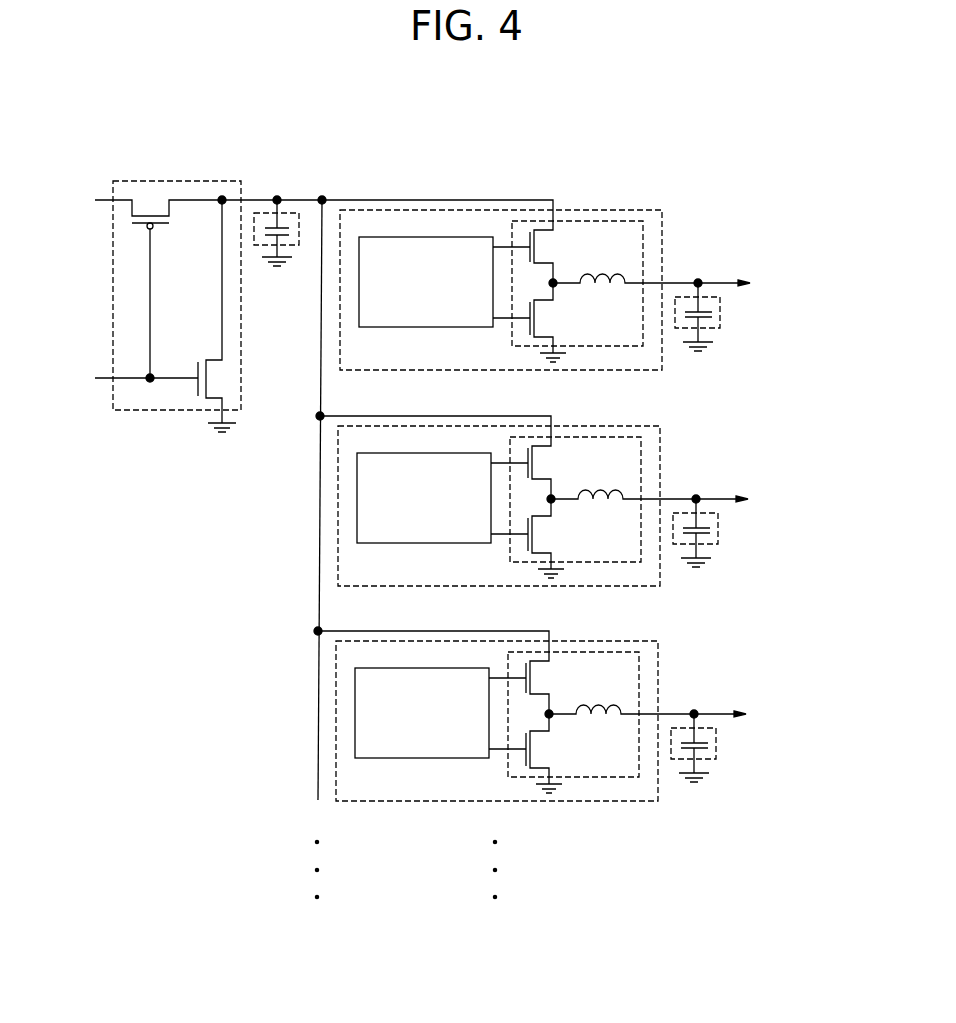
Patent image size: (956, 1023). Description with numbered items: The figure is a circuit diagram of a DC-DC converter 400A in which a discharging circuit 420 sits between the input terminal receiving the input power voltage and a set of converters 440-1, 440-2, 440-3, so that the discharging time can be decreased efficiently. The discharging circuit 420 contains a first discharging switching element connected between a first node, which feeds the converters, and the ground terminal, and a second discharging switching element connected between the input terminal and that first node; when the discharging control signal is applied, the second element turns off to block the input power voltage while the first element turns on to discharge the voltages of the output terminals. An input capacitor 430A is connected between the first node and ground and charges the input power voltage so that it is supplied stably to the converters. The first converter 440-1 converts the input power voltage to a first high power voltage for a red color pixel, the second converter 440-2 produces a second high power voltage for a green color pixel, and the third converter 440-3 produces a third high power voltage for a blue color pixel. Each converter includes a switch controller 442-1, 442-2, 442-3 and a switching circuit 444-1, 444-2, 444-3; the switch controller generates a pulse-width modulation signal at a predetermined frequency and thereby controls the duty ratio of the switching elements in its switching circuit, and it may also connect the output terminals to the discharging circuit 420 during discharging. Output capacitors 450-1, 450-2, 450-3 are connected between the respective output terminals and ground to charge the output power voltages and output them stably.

The DC-DC converter 400A is at (528, 143).
The discharging circuit 420 is at (178, 181).
The input capacitor 430A is at (290, 213).
The first converter 440-1 is at (663, 243).
The second converter 440-2 is at (661, 459).
The third converter 440-3 is at (659, 674).
The switch controller 442-1 is at (427, 327).
The switch controller 442-2 is at (425, 543).
The switch controller 442-3 is at (423, 758).
The switching circuit 444-1 is at (605, 346).
The switching circuit 444-2 is at (603, 562).
The switching circuit 444-3 is at (601, 777).
The output capacitor 450-1 is at (720, 313).
The output capacitor 450-2 is at (718, 529).
The output capacitor 450-3 is at (716, 744).